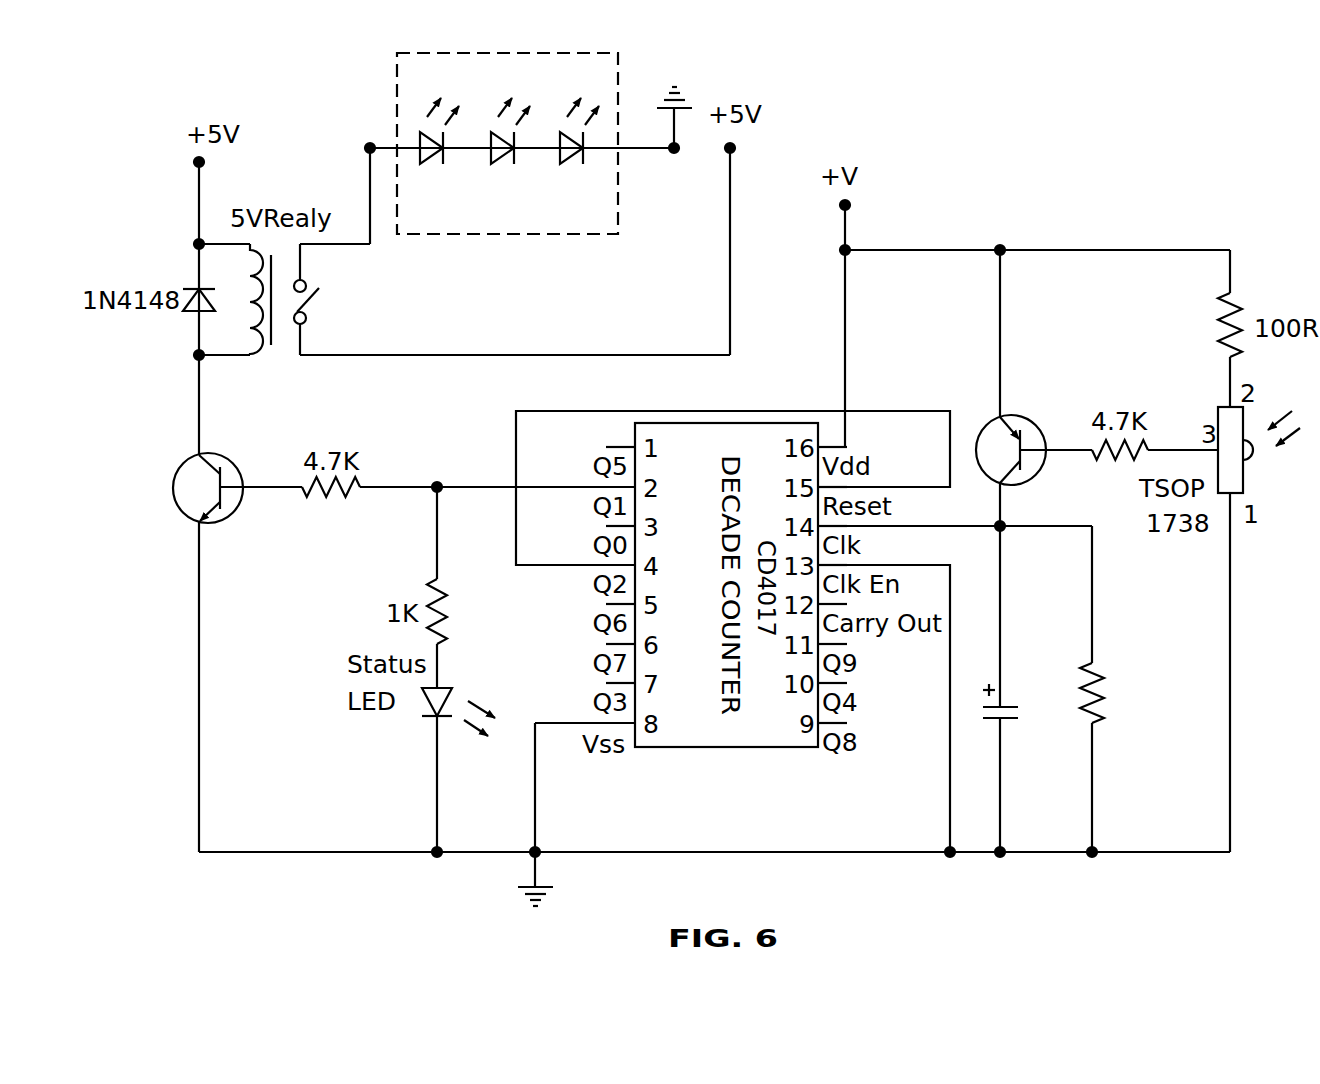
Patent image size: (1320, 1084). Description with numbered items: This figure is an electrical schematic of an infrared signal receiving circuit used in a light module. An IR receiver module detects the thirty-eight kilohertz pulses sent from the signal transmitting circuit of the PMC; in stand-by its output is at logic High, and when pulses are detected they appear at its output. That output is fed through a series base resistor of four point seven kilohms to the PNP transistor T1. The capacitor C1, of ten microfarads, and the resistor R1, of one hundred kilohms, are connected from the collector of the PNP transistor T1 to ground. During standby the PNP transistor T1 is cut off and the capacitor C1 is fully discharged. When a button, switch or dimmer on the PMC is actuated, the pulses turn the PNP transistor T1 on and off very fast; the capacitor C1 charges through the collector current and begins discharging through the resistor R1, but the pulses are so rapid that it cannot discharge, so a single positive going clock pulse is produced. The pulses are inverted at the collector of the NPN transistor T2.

The PNP transistor T1 is at (1030, 414).
The NPN transistor T2 is at (233, 527).
The capacitor C1 is at (1024, 714).
The resistor R1 is at (1126, 689).